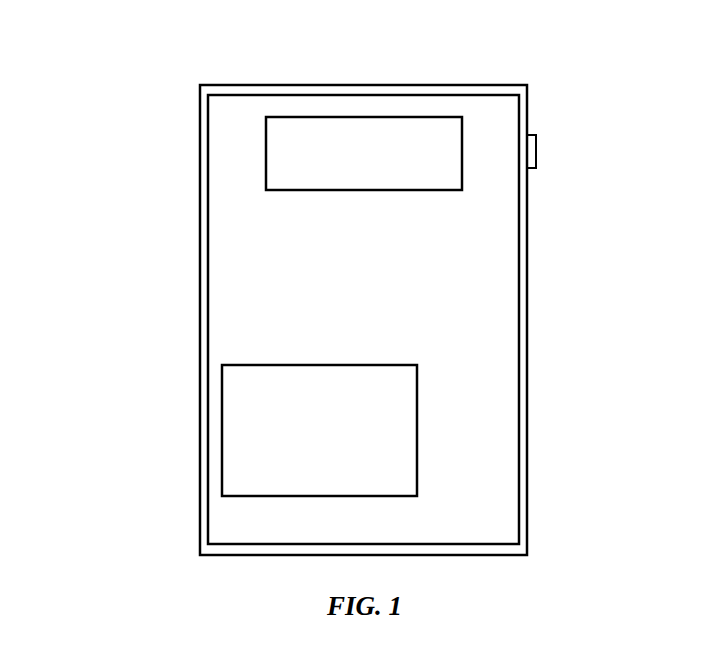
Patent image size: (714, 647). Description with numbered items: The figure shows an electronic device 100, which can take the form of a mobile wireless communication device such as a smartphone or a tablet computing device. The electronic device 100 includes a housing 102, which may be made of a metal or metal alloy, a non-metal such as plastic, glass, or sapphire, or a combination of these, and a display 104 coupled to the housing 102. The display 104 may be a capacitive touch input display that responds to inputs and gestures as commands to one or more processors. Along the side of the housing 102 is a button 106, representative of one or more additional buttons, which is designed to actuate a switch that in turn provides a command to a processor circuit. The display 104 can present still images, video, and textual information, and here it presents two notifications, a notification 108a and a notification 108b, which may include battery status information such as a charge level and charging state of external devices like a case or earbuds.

The electronic device 100 is at (50, 150).
The housing 102 is at (527, 277).
The display 104 is at (373, 286).
The button 106 is at (536, 151).
The notification 108a is at (388, 178).
The notification 108b is at (345, 456).